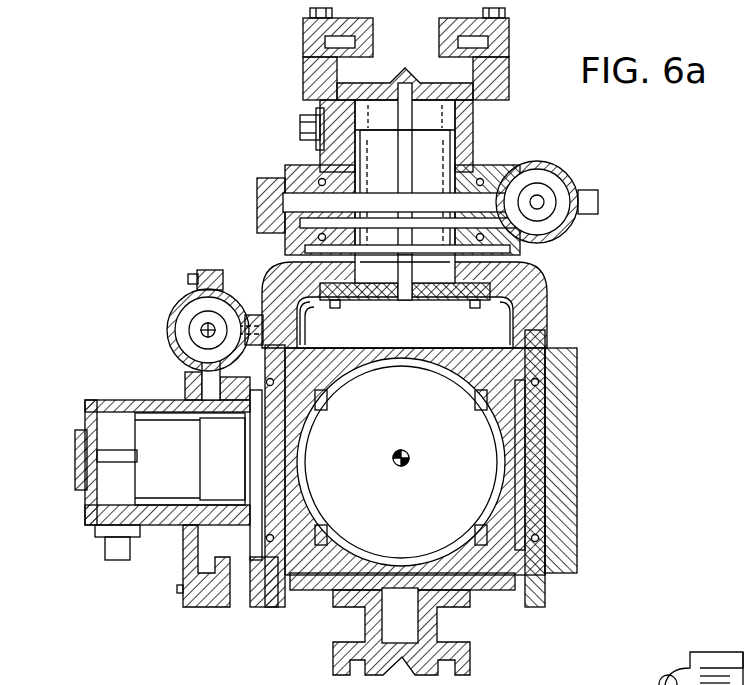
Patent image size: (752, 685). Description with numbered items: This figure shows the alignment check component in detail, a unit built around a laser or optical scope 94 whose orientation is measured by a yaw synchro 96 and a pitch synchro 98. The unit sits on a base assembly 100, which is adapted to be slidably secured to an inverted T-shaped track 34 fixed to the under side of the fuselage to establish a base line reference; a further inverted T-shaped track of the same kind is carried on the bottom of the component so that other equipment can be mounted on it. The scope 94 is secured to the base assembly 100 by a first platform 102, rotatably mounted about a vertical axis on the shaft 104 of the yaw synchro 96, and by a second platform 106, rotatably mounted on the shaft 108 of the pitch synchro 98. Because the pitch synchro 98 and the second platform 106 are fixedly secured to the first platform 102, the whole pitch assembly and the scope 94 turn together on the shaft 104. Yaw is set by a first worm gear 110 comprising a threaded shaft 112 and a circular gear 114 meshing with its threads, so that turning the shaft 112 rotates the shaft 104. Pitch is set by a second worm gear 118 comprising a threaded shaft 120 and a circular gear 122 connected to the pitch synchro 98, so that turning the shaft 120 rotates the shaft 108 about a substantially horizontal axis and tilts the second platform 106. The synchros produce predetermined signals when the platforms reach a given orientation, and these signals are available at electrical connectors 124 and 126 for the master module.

The inverted T-shaped track 34 is at (333, 652).
The laser or optical scope 94 is at (413, 468).
The yaw synchro 96 is at (405, 191).
The pitch synchro 98 is at (190, 459).
The base assembly 100 is at (303, 45).
The first platform 102 is at (549, 296).
The shaft of the yaw synchro 104 is at (405, 78).
The second platform 106 is at (318, 352).
The shaft of the pitch synchro 108 is at (118, 452).
The first worm gear 110 is at (503, 147).
The threaded shaft 112 is at (540, 200).
The circular gear 114 is at (298, 200).
The second worm gear 118 is at (148, 310).
The threaded shaft 120 is at (205, 326).
The circular gear 122 is at (210, 386).
The electrical connector 124 is at (306, 128).
The electrical connector 126 is at (116, 556).